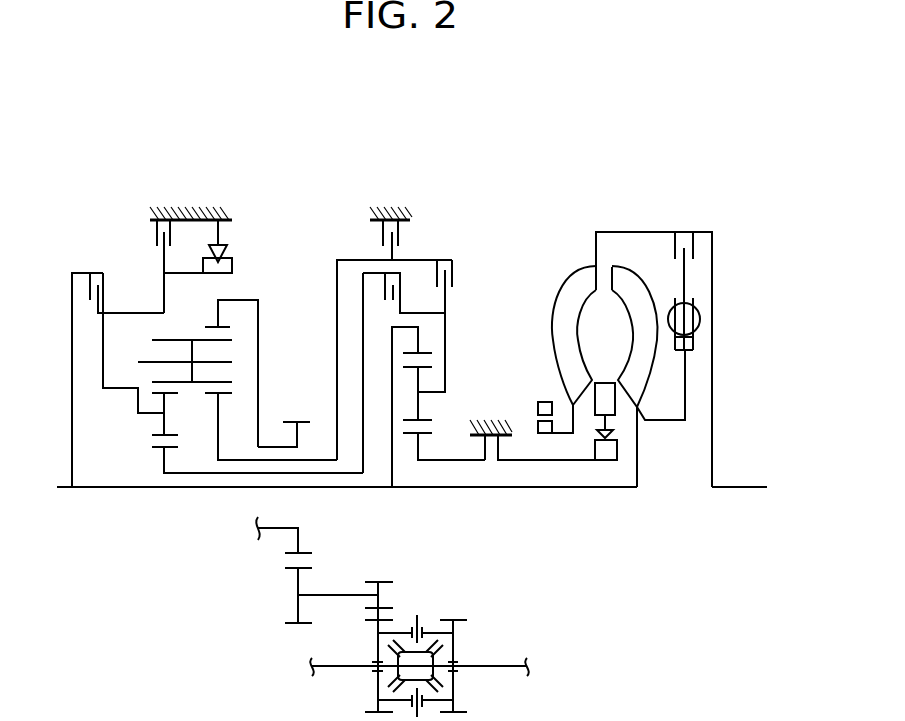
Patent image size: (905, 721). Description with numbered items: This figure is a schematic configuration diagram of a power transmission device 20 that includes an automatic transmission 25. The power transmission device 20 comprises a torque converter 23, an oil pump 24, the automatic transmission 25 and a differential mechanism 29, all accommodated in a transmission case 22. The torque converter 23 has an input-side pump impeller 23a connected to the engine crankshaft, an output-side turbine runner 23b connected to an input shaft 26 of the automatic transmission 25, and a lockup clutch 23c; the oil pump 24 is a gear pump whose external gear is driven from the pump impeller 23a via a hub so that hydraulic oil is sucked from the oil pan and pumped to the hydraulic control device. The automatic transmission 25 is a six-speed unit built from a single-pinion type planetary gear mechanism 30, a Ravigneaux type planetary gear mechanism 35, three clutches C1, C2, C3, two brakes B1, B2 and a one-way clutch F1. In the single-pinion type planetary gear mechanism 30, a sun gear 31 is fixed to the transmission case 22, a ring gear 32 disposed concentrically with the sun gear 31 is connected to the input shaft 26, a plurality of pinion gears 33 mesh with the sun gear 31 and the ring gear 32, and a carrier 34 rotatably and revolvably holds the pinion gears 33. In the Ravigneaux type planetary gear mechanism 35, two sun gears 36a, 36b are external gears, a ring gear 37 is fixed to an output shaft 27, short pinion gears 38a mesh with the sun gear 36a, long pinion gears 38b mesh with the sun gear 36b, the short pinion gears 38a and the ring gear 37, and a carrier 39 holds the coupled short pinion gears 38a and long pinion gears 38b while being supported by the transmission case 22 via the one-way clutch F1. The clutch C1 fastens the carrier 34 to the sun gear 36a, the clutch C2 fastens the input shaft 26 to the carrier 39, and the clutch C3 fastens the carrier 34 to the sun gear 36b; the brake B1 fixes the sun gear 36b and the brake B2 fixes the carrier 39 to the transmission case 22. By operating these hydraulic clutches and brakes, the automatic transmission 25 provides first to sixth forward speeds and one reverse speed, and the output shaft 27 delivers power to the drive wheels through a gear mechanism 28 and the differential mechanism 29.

The power transmission device 20 is at (390, 175).
The transmission case 22 is at (175, 207).
The torque converter 23 is at (588, 260).
The pump impeller 23a is at (575, 283).
The turbine runner 23b is at (635, 288).
The lockup clutch 23c is at (693, 278).
The oil pump 24 is at (527, 430).
The automatic transmission 25 is at (305, 234).
The input shaft 26 is at (563, 488).
The output shaft 27 is at (278, 447).
The gear mechanism 28 is at (280, 577).
The differential mechanism 29 is at (472, 633).
The single-pinion type planetary gear mechanism 30 is at (467, 339).
The sun gear 31 is at (410, 436).
The ring gear 32 is at (403, 353).
The pinion gears 33 is at (418, 402).
The carrier 34 is at (445, 353).
The Ravigneaux type planetary gear mechanism 35 is at (132, 445).
The sun gear 36a is at (153, 449).
The sun gear 36b is at (215, 395).
The ring gear 37 is at (228, 327).
The short pinion gears 38a is at (164, 428).
The long pinion gears 38b is at (157, 340).
The carrier 39 is at (103, 357).
The brake B1 is at (400, 240).
The brake B2 is at (158, 240).
The clutch C1 is at (383, 290).
The clutch C2 is at (92, 290).
The clutch C3 is at (450, 277).
The one-way clutch F1 is at (233, 262).